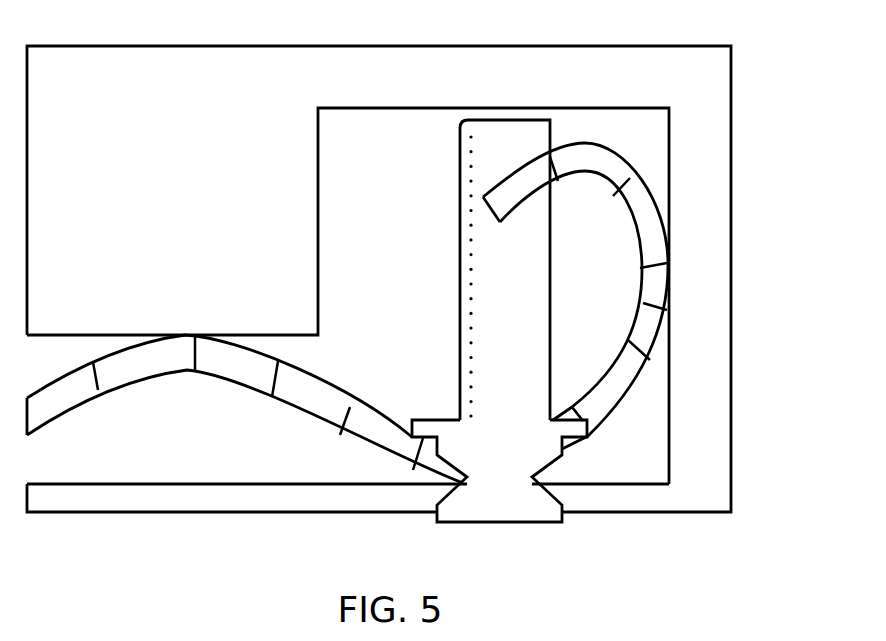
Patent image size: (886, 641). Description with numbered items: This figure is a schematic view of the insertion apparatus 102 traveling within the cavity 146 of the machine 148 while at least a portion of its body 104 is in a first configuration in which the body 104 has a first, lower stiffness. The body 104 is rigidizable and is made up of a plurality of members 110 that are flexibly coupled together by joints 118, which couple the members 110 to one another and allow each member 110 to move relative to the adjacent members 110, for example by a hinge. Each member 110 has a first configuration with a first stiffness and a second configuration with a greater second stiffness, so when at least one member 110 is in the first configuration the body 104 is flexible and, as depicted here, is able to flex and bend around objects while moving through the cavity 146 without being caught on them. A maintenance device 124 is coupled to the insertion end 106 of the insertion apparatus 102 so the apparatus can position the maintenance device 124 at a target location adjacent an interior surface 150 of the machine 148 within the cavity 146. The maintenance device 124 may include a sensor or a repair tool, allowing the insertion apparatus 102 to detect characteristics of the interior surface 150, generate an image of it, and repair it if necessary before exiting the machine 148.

The insertion apparatus 102 is at (612, 143).
The body 104 is at (648, 208).
The insertion end 106 is at (567, 158).
The members 110 is at (622, 380).
The joints 118 is at (640, 348).
The maintenance device 124 is at (527, 180).
The cavity 146 is at (387, 193).
The machine 148 is at (150, 65).
The interior surface 150 is at (510, 352).